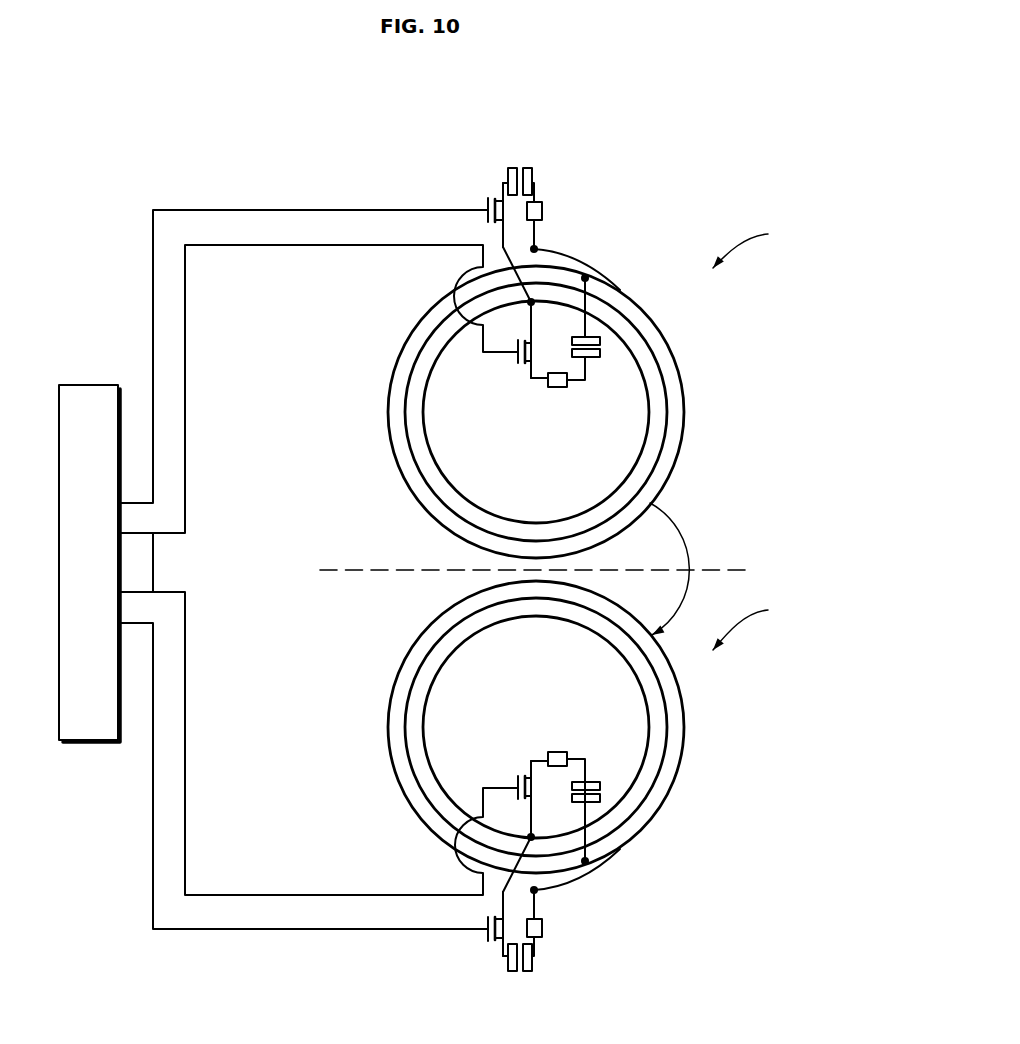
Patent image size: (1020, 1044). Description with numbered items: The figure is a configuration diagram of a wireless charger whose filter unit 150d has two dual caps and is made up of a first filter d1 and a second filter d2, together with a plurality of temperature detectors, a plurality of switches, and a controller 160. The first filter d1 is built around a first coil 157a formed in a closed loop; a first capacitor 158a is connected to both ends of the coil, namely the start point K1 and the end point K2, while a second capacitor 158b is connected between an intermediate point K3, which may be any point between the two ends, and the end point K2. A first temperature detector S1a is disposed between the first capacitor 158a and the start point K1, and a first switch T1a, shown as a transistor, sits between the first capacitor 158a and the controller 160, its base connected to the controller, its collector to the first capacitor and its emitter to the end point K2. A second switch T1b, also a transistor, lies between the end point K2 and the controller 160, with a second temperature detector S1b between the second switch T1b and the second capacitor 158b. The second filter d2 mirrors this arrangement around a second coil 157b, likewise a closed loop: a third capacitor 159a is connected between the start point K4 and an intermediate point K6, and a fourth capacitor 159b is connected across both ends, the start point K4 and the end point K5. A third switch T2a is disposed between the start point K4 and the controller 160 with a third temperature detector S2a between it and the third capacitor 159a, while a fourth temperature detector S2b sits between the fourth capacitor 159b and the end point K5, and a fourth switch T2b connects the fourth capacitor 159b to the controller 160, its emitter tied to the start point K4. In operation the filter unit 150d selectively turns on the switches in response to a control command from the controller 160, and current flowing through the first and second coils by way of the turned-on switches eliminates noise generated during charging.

The filter unit 150d is at (812, 116).
The controller 160 is at (92, 384).
The first coil 157a is at (684, 402).
The second coil 157b is at (684, 718).
The first capacitor 158a is at (532, 172).
The second capacitor 158b is at (600, 340).
The third capacitor 159a is at (600, 787).
The fourth capacitor 159b is at (532, 960).
The first switch T1a is at (488, 200).
The second switch T1b is at (517, 364).
The third switch T2a is at (517, 775).
The fourth switch T2b is at (488, 941).
The first temperature detector S1a is at (542, 205).
The second temperature detector S1b is at (557, 388).
The third temperature detector S2a is at (557, 752).
The fourth temperature detector S2b is at (542, 928).
The start point K1 is at (534, 249).
The end point K2 is at (531, 302).
The intermediate point K3 is at (585, 278).
The start point K4 is at (531, 837).
The end point K5 is at (534, 890).
The intermediate point K6 is at (585, 861).
The first filter d1 is at (754, 244).
The second filter d2 is at (754, 624).